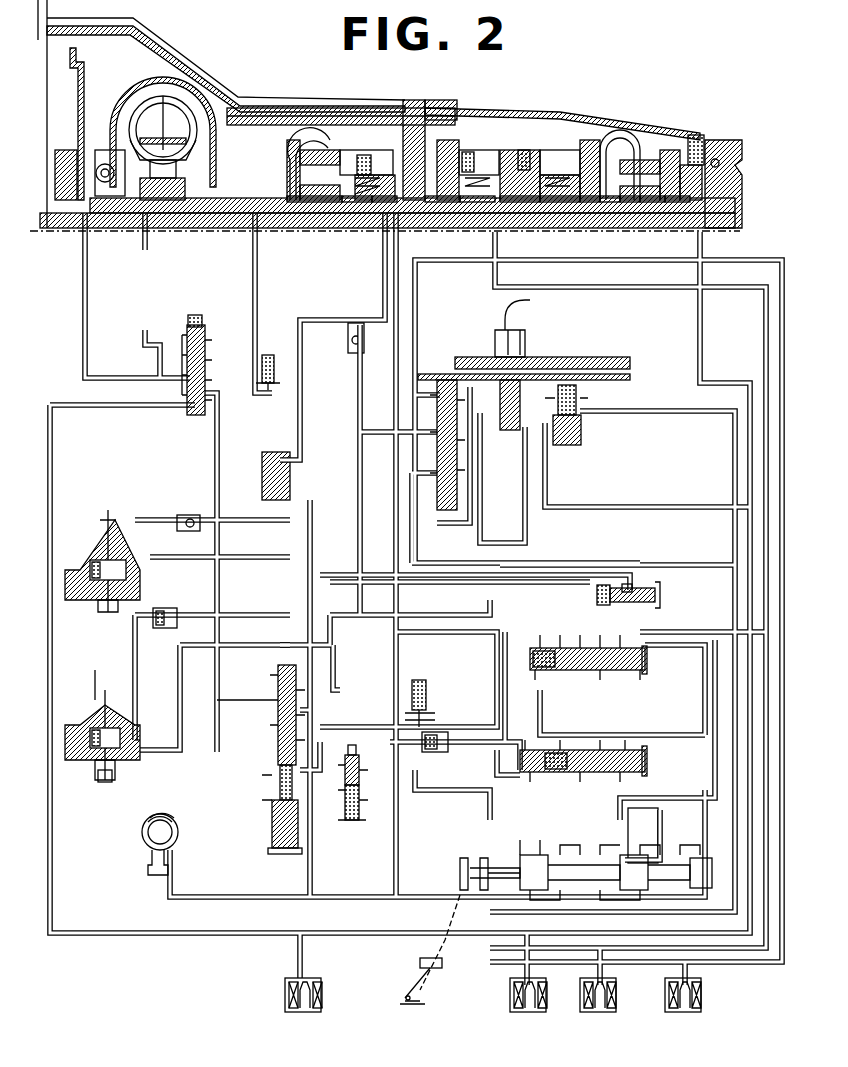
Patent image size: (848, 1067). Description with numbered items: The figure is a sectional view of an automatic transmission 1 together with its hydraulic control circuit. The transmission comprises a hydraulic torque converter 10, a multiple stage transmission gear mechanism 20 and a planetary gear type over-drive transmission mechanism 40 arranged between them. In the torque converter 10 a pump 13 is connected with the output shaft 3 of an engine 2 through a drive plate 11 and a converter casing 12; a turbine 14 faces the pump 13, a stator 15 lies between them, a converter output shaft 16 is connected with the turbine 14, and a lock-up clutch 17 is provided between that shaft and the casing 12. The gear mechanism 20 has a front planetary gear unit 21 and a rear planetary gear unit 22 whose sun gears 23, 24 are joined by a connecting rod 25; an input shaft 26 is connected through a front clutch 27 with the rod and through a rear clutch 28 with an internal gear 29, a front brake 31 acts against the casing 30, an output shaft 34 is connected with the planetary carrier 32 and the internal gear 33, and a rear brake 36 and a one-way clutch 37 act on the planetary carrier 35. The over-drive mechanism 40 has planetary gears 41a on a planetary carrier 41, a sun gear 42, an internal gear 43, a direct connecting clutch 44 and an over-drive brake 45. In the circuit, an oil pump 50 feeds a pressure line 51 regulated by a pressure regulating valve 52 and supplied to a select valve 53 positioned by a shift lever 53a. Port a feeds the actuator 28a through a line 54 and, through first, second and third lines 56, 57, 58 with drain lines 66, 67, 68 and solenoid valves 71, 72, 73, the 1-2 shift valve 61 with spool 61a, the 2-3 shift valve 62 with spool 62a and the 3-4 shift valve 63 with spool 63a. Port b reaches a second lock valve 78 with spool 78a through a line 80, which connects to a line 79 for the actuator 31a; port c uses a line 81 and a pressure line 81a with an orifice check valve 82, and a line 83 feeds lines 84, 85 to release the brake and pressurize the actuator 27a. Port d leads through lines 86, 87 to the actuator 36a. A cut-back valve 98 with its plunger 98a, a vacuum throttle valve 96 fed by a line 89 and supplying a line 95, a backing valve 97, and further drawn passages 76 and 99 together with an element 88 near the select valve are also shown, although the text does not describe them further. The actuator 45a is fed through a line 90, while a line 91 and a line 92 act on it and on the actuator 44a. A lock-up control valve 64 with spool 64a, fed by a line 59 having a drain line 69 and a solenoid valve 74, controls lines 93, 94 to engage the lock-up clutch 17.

The automatic transmission 1 is at (720, 128).
The engine 2 is at (40, 12).
The output shaft 3 is at (62, 222).
The hydraulic torque converter 10 is at (185, 78).
The drive plate 11 is at (88, 72).
The converter casing 12 is at (150, 85).
The pump 13 is at (205, 108).
The turbine 14 is at (128, 95).
The stator 15 is at (190, 170).
The converter output shaft 16 is at (118, 222).
The lock-up clutch 17 is at (82, 112).
The multiple stage transmission gear mechanism 20 is at (618, 140).
The front planetary gear unit 21 is at (600, 140).
The rear planetary gear unit 22 is at (690, 145).
The sun gear 23 is at (575, 220).
The sun gear 24 is at (622, 220).
The connecting rod 25 is at (600, 220).
The input shaft 26 is at (472, 222).
The front clutch 27 is at (460, 140).
The actuator 27a is at (428, 252).
The rear clutch 28 is at (548, 140).
The hydraulic actuator 28a is at (508, 215).
The internal gear 29 is at (580, 145).
The casing 30 is at (520, 135).
The front brake 31 is at (498, 140).
The actuator 31a is at (80, 715).
The planetary carrier 32 is at (545, 215).
The internal gear 33 is at (672, 150).
The output shaft 34 is at (648, 220).
The planetary carrier 35 is at (655, 150).
The rear brake 36 is at (715, 135).
The actuator 36a is at (722, 163).
The one-way clutch 37 is at (672, 220).
The planetary gear type over-drive transmission mechanism 40 is at (290, 125).
The planetary carrier 41 is at (335, 215).
The planetary gears 41a is at (278, 225).
The sun gear 42 is at (305, 215).
The internal gear 43 is at (312, 150).
The direct connecting clutch 44 is at (405, 130).
The actuator 44a is at (370, 215).
The over-drive brake 45 is at (345, 140).
The actuator 45a is at (85, 525).
The oil pump 50 is at (145, 832).
The pressure line 51 is at (228, 897).
The pressure regulating valve 52 is at (262, 805).
The select valve 53 is at (515, 855).
The shift lever 53a is at (438, 965).
The line 54 is at (625, 287).
The first line 56 is at (606, 940).
The second line 57 is at (718, 948).
The third line 58 is at (755, 962).
The line 59 is at (228, 933).
The 1-2 shift valve 61 is at (648, 660).
The spool 61a is at (648, 680).
The 2-3 shift valve 62 is at (652, 755).
The spool 62a is at (650, 770).
The 3-4 shift valve 63 is at (440, 372).
The spool 63a is at (440, 410).
The lock-up control valve 64 is at (185, 418).
The spool 64a is at (204, 350).
The first drain line 66 is at (540, 972).
The second drain line 67 is at (610, 972).
The third drain line 68 is at (697, 972).
The drain line 69 is at (310, 955).
The first solenoid valve 71 is at (508, 996).
The second solenoid valve 72 is at (578, 996).
The third solenoid valve 73 is at (663, 996).
The solenoid valve 74 is at (282, 996).
The oil line 76 is at (680, 632).
The second lock valve 78 is at (338, 820).
The spool 78a is at (355, 752).
The line 79 is at (338, 680).
The line 80 is at (420, 805).
The line 81 is at (398, 843).
The pressure line 81a is at (450, 735).
The orifice check valve 82 is at (442, 750).
The line 83 is at (492, 780).
The line 84 is at (348, 615).
The line 85 is at (400, 592).
The line 86 is at (720, 835).
The line 87 is at (600, 718).
The accumulator 88 is at (662, 815).
The line 89 is at (390, 530).
The line 90 is at (265, 570).
The line 91 is at (358, 385).
The line 92 is at (352, 492).
The line 93 is at (222, 676).
The line 94 is at (88, 310).
The line 95 is at (482, 482).
The vacuum throttle valve 96 is at (525, 375).
The valve 97 is at (585, 447).
The cut-back valve 98 is at (658, 590).
The timing valve plunger 98a is at (635, 585).
The oil line 99 is at (475, 585).